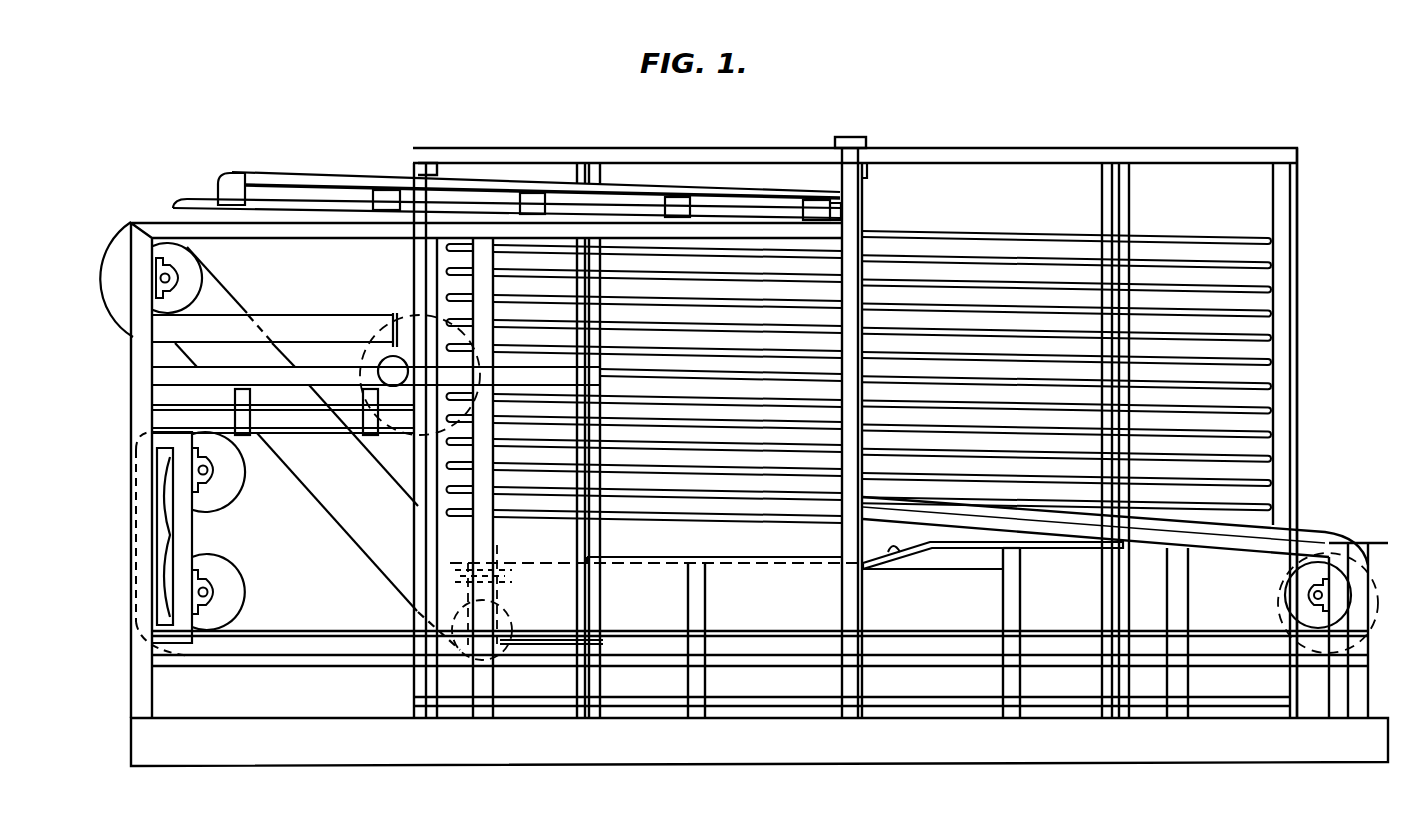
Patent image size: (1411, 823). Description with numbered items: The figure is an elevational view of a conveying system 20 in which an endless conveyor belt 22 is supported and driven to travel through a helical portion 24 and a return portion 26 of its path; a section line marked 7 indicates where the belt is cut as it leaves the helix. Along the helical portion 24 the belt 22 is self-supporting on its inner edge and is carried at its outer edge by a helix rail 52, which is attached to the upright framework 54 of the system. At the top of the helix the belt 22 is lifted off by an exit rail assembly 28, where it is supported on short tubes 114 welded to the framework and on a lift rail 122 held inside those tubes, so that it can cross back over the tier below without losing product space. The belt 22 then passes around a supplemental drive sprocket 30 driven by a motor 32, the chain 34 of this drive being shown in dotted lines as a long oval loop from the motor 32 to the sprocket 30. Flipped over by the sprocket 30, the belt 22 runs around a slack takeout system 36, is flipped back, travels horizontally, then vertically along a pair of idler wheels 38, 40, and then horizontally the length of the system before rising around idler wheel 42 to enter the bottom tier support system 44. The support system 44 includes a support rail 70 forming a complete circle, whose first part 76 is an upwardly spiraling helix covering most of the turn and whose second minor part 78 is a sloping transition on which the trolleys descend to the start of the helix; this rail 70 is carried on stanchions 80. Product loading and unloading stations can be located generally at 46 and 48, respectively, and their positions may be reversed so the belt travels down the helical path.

The conveying system 20 is at (1366, 238).
The conveyor belt 22 is at (303, 320).
The helical portion 24 is at (1252, 354).
The return portion 26 is at (118, 230).
The exit rail assembly 28 is at (374, 163).
The supplemental drive sprocket 30 is at (167, 250).
The motor 32 is at (445, 612).
The chain 34 is at (312, 496).
The slack takeout system 36 is at (404, 311).
The idler wheel 38 is at (228, 494).
The idler wheel 40 is at (232, 614).
The idler wheel 42 is at (1306, 606).
The bottom tier support system 44 is at (1208, 558).
The loading station 46 is at (1300, 523).
The unloading station 48 is at (133, 203).
The helix rail 52 is at (1050, 230).
The upright framework 54 is at (1300, 275).
The support rail 70 is at (965, 556).
The first part of rail 76 is at (1050, 560).
The second minor part of rail 78 is at (893, 546).
The stanchions 80 is at (706, 613).
The short tubes 114 is at (236, 188).
The lift rail 122 is at (190, 198).
The section line 7- 7 is at (303, 265).